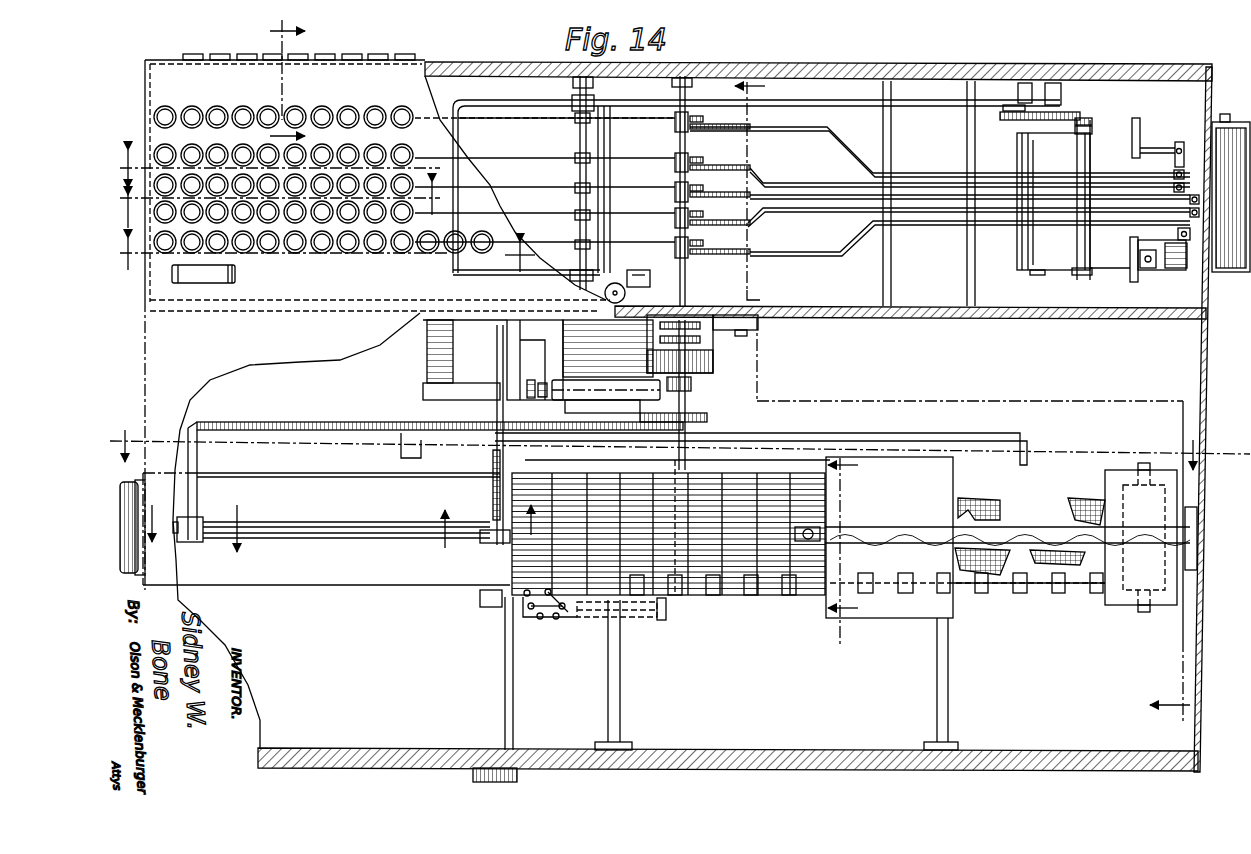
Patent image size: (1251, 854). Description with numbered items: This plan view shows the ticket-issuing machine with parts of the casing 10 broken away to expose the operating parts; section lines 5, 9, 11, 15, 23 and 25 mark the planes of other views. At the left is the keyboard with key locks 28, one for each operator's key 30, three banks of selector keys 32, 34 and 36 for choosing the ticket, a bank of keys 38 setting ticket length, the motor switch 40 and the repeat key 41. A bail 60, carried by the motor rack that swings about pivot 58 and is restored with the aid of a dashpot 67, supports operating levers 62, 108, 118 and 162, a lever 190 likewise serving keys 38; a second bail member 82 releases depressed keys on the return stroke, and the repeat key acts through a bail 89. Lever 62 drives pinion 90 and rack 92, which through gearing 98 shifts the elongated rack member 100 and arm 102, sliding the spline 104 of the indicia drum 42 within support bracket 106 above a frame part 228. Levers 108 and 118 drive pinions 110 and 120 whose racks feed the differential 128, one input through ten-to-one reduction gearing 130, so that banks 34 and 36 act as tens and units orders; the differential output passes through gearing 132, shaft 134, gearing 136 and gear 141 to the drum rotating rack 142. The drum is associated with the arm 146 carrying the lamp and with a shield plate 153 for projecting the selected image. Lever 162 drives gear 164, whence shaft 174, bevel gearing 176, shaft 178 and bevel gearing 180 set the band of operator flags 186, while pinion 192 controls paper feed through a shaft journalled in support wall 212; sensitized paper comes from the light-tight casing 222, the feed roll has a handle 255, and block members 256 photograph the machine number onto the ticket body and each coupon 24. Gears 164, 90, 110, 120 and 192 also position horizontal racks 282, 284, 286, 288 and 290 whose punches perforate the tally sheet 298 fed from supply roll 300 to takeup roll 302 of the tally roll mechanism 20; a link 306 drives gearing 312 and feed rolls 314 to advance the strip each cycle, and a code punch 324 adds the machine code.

The section line 5 is at (119, 175).
The section line 9 is at (280, 82).
The casing 10 is at (281, 205).
The section line 11 is at (330, 261).
The section line 15 is at (962, 406).
The tally roll mechanism 20 is at (1232, 108).
The section line 23 is at (852, 550).
The separable coupon 24 is at (484, 533).
The section line 25 is at (198, 517).
The key locks 28 is at (352, 55).
The operator's keys 30 is at (328, 112).
The selector keys 32 is at (184, 165).
The selector keys 34 is at (172, 148).
The selector keys 36 is at (186, 222).
The ticket length keys 38 is at (347, 250).
The motor switch 40 is at (233, 283).
The repeat key 41 is at (604, 294).
The indicia reservoir drum 42 is at (775, 598).
The pivot 58 is at (590, 90).
The bail 60 is at (460, 124).
The operating lever 62 is at (530, 158).
The dashpot 67 is at (640, 287).
The second bail member 82 is at (610, 203).
The bail 89 is at (598, 145).
The pinion 90 is at (675, 158).
The rack 92 is at (735, 147).
The gearing 98 is at (695, 415).
The elongated rack member 100 is at (330, 422).
The arm 102 is at (195, 462).
The spline 104 is at (295, 540).
The support bracket 106 is at (490, 496).
The operating lever 108 is at (512, 187).
The pinion 110 is at (690, 168).
The lever 118 is at (514, 213).
The pinion 120 is at (672, 222).
The differential 128 is at (713, 352).
The reduction gearing 130 is at (660, 326).
The gearing 132 is at (692, 381).
The shaft 134 is at (600, 380).
The gearing 136 is at (530, 398).
The gear 141 is at (497, 374).
The drum positioning rack 142 is at (465, 360).
The frame bracket arm 146 is at (993, 530).
The shield plate 153 is at (888, 620).
The lever 162 is at (472, 100).
The gear 164 is at (740, 107).
The shaft 174 is at (683, 464).
The bevel gearing 176 is at (665, 615).
The shaft 178 is at (628, 618).
The bevel gearing 180 is at (570, 612).
The flags 186 is at (555, 622).
The rod 190 is at (612, 245).
The pinion 192 is at (688, 258).
The support wall 212 is at (988, 433).
The light-tight casing 222 is at (1120, 607).
The frame 228 is at (292, 588).
The handle 255 is at (520, 780).
The block members 256 is at (1058, 595).
The rack 282 is at (808, 125).
The rack 284 is at (788, 188).
The rack 286 is at (830, 200).
The rack 288 is at (776, 213).
The rack 290 is at (810, 257).
The tally sheet 298 is at (1068, 268).
The supply roll 300 is at (1020, 268).
The spring takeup roll 302 is at (1238, 280).
The link 306 is at (927, 102).
The gearing 312 is at (1060, 110).
The feed rolls 314 is at (1090, 250).
The code punch 324 is at (1180, 142).